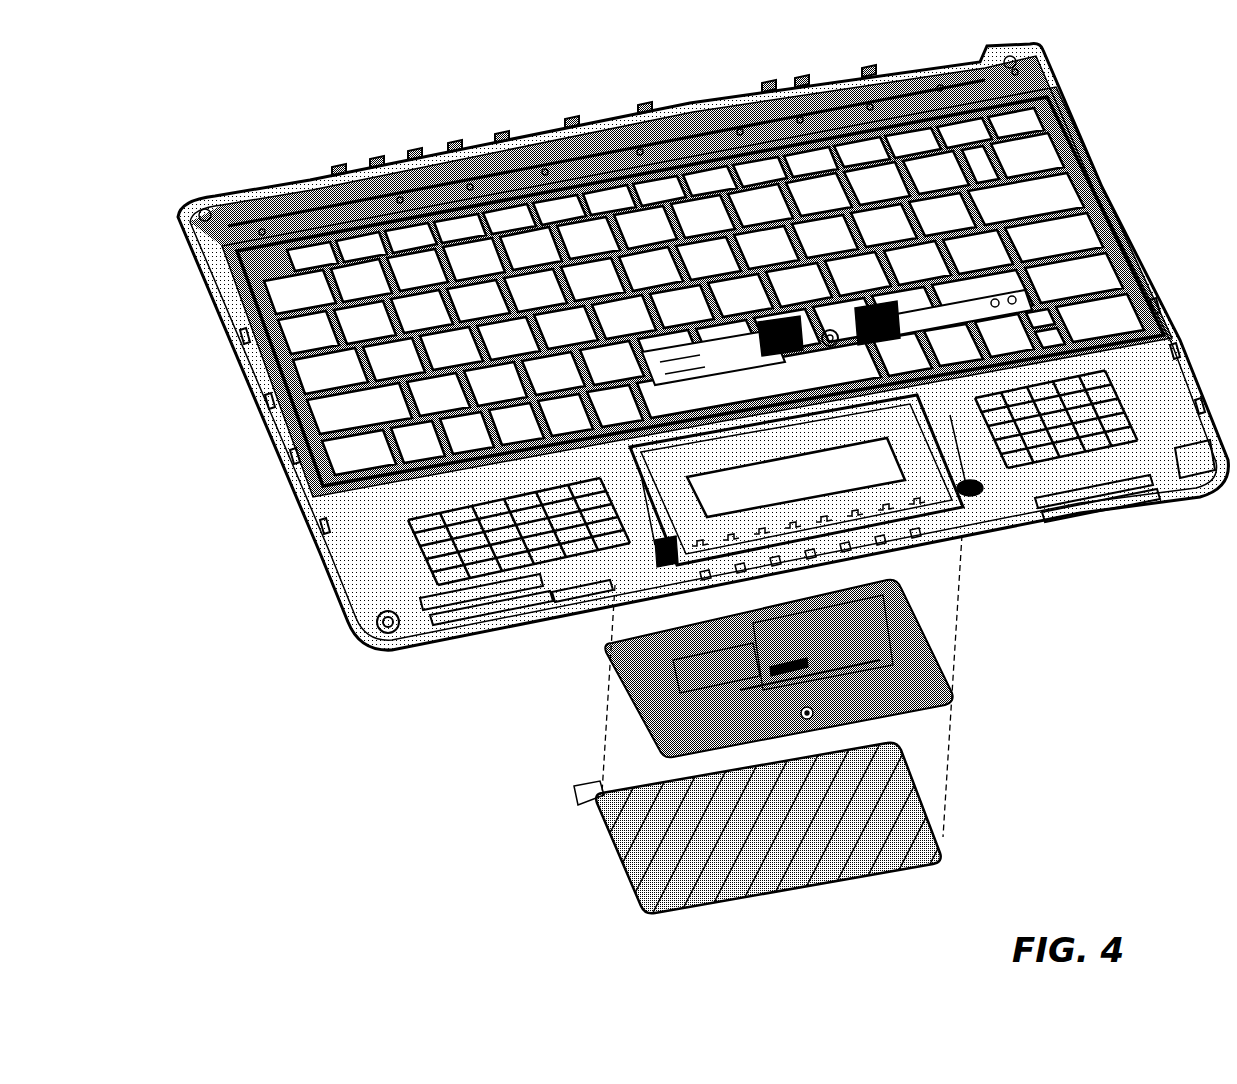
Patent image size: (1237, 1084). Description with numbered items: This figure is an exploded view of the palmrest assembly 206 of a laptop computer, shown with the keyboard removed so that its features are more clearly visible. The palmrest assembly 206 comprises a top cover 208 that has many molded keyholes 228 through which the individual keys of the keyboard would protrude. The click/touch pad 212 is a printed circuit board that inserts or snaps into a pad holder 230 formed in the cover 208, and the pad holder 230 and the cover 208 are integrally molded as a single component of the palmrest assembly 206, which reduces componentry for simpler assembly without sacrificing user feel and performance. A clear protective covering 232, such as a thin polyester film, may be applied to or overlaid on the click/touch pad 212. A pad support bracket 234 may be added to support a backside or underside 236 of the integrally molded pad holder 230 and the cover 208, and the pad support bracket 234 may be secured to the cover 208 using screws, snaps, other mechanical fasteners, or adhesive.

The palmrest assembly 206 is at (309, 789).
The top cover 208 is at (1070, 93).
The click/touch pad 212 is at (952, 696).
The keyholes 228 is at (356, 403).
The pad holder 230 is at (916, 472).
The protective covering 232 is at (654, 908).
The pad support bracket 234 is at (975, 285).
The backside or underside 236 is at (796, 447).